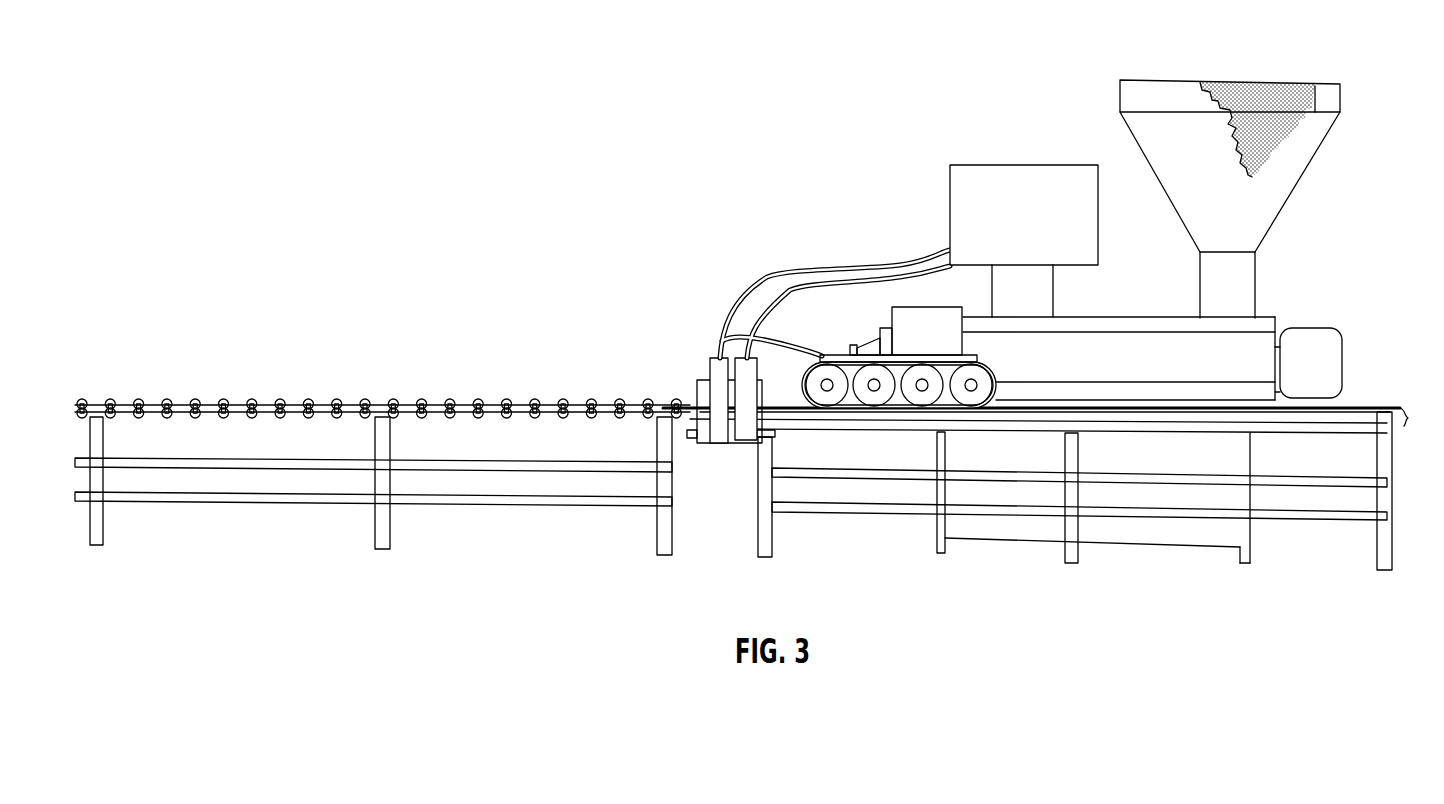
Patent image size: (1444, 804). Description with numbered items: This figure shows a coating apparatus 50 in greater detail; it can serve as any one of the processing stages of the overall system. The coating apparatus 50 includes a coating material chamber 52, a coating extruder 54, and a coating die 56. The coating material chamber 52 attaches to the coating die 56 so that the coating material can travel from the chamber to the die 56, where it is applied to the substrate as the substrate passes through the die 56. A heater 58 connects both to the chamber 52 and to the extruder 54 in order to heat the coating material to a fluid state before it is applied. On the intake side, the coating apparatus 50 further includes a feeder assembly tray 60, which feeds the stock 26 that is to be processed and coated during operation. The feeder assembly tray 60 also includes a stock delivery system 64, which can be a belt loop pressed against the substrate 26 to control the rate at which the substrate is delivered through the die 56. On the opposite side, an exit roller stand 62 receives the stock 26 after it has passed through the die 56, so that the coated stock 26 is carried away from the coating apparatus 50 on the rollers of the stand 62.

The coating apparatus 50 is at (580, 182).
The coating material chamber 52 is at (1138, 80).
The coating extruder 54 is at (1143, 317).
The coating die 56 is at (710, 367).
The heater 58 is at (1031, 165).
The feeder assembly tray 60 is at (917, 471).
The exit roller stand 62 is at (193, 500).
The stock delivery system 64 is at (827, 392).
The stock 26 is at (673, 406).